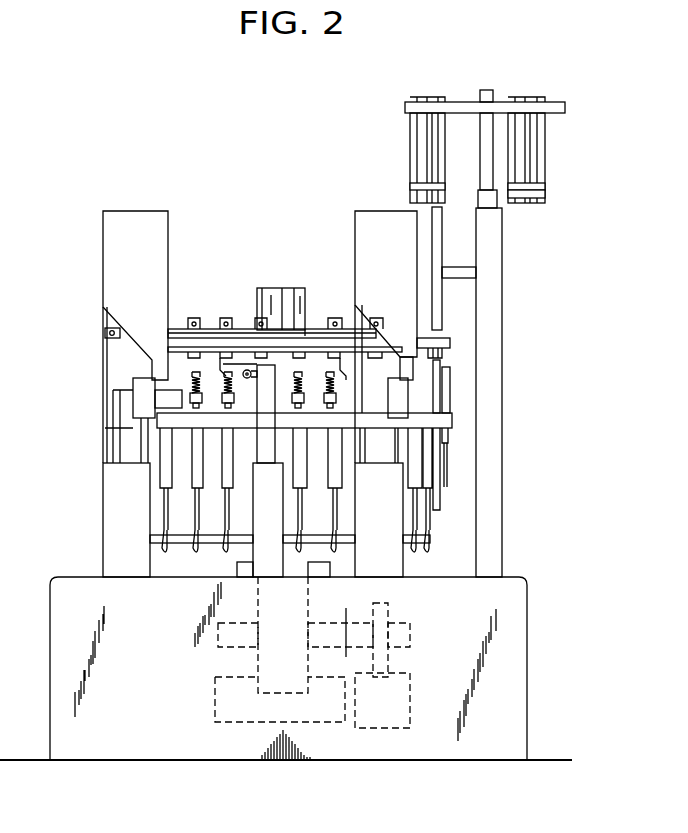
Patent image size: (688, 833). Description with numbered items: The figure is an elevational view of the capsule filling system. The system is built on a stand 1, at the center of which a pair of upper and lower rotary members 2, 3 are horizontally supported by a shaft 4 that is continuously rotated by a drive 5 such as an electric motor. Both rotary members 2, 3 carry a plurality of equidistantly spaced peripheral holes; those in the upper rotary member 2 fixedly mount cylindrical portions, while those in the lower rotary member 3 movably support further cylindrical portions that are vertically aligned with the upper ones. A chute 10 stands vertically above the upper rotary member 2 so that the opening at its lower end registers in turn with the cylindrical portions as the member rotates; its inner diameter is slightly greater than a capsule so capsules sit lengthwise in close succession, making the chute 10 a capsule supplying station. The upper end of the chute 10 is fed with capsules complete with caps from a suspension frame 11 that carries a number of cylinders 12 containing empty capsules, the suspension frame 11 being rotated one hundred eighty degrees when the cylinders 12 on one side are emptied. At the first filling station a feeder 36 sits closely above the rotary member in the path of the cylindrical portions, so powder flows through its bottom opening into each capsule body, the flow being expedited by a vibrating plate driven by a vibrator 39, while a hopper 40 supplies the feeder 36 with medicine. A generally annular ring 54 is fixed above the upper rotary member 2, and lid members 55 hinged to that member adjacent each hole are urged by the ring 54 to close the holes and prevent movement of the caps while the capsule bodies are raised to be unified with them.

The stand 1 is at (68, 585).
The upper rotary member 2 is at (177, 340).
The lower rotary member 3 is at (241, 415).
The shaft 4 is at (278, 297).
The drive 5 is at (398, 690).
The chute 10 is at (436, 300).
The suspension frame 11 is at (456, 107).
The cylinders 12 is at (415, 135).
The feeder 36 is at (140, 392).
The vibrator 39 is at (125, 403).
The hopper 40 is at (128, 220).
The annular ring 54 is at (326, 330).
The lid member 55 is at (260, 331).